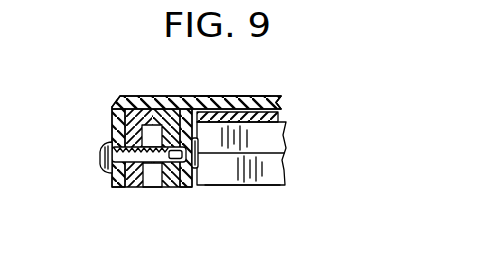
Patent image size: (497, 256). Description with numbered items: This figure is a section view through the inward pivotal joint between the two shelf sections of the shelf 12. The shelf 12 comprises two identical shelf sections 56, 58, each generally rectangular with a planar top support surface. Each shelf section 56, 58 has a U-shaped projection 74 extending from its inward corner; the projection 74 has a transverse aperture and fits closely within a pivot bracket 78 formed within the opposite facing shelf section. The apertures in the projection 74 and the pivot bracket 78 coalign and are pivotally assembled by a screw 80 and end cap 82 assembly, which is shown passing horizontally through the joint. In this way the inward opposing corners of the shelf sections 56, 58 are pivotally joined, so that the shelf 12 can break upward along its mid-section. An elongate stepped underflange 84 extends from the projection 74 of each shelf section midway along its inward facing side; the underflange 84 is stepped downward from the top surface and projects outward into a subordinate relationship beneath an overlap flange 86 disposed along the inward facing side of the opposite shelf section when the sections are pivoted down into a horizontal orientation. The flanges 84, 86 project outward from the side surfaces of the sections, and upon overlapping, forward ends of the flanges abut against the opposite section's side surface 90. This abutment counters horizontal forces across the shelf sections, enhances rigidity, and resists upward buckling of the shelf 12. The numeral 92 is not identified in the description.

The shelf 12 is at (269, 98).
The shelf section 56 is at (268, 130).
The shelf section 58 is at (163, 96).
The U-shaped projection 74 is at (137, 115).
The pivot bracket 78 is at (112, 131).
The screw 80 is at (105, 163).
The end cap 82 is at (200, 172).
The stepped underflange 84 is at (278, 117).
The overlap flange 86 is at (240, 94).
The side surface 90 is at (257, 142).
The lower edge 92 is at (240, 186).